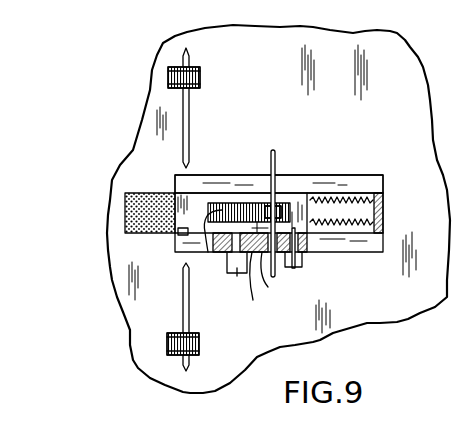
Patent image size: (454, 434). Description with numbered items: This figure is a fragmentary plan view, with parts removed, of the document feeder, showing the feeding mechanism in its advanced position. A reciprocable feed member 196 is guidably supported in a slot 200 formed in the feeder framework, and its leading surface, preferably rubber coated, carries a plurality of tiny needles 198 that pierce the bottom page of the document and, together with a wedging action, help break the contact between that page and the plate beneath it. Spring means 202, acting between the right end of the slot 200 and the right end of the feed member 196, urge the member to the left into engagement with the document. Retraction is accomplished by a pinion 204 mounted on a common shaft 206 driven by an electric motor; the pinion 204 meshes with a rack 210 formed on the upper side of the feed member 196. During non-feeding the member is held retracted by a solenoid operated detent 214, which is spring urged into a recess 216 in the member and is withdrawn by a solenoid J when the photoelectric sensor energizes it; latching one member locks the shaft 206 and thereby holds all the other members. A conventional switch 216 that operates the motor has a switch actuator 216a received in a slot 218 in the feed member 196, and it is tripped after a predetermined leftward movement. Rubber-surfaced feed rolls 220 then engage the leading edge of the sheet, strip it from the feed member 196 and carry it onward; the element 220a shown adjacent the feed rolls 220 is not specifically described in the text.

The feed members 196 is at (195, 200).
The tiny needles 198 is at (123, 222).
The slots 200 is at (348, 197).
The spring means 202 is at (373, 228).
The pinions 204 is at (282, 207).
The pinion shaft 206 is at (276, 153).
The rack 210 is at (227, 267).
The solenoid operated detent 214 is at (260, 288).
The recess 216 is at (182, 235).
The switch actuator 216a is at (305, 250).
The slot 218 is at (279, 279).
The feed rolls 220 is at (199, 75).
The shaft 220a is at (189, 125).
The solenoid J is at (237, 276).